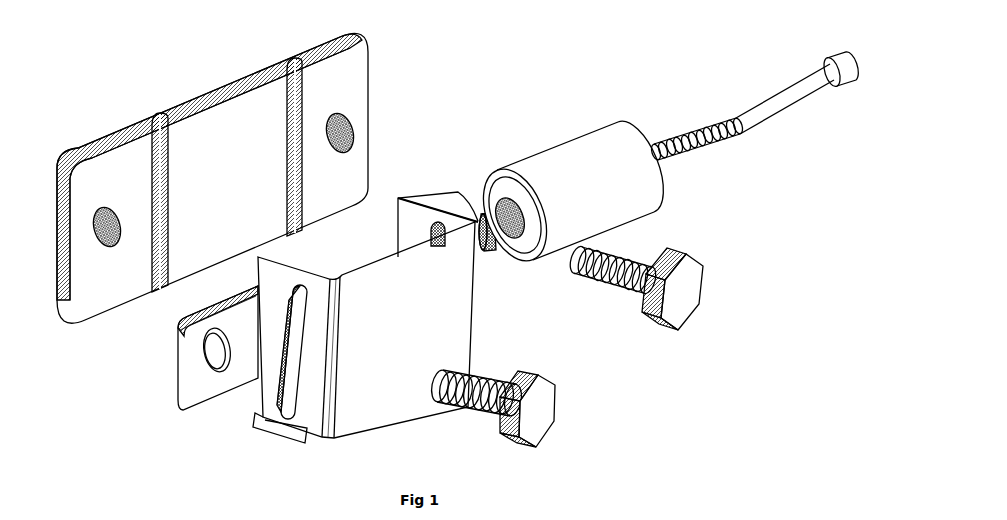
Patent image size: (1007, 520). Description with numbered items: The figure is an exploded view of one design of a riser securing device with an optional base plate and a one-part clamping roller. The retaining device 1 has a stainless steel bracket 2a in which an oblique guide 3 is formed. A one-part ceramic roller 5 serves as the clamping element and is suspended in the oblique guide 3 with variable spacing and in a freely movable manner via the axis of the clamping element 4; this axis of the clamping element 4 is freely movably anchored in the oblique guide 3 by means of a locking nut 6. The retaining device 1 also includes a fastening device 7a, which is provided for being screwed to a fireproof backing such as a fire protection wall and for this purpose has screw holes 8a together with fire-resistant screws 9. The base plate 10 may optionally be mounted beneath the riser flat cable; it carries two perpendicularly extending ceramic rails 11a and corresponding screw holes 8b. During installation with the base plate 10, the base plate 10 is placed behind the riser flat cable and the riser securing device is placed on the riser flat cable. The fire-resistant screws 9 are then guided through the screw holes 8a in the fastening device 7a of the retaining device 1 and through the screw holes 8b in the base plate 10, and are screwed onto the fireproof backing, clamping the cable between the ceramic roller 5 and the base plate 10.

The retaining device 1 is at (217, 423).
The stainless steel bracket 2a is at (350, 405).
The oblique guide 3 is at (267, 417).
The axis of the clamping element 4 is at (777, 100).
The one-part ceramic roller 5 is at (563, 165).
The locking nut 6 is at (481, 218).
The fastening device 7a is at (207, 323).
The screw holes 8a is at (213, 367).
The screw holes 8b is at (332, 141).
The fire-resistant screws 9 is at (553, 415).
The base plate 10 is at (358, 78).
The ceramic rails 11a is at (153, 148).